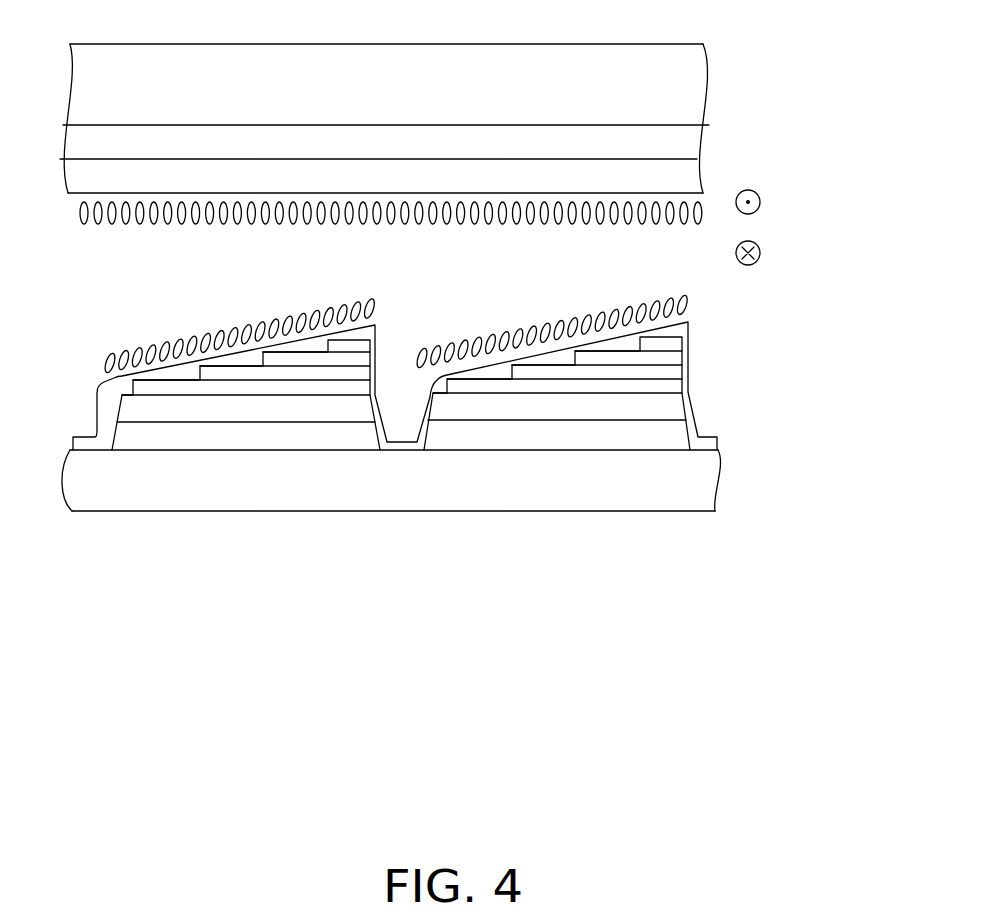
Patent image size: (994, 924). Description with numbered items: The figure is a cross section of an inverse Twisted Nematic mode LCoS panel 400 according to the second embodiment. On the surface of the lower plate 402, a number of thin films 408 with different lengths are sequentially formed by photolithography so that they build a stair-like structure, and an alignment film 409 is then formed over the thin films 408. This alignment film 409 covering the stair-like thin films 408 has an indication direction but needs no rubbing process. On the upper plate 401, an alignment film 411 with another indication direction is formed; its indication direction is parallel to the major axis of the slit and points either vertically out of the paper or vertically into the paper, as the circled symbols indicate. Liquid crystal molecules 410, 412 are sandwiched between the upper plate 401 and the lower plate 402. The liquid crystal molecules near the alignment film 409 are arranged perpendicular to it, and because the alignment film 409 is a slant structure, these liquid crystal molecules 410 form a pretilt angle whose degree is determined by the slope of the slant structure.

The inverse Twisted Nematic mode LCoS panel 400 is at (788, 615).
The upper plate 401 is at (422, 152).
The lower plate 402 is at (461, 393).
The thin films 408 is at (693, 338).
The alignment film 409 is at (682, 330).
The liquid crystal molecules 410 is at (110, 366).
The alignment film 411 is at (83, 180).
The liquid crystal molecules 412 is at (83, 224).